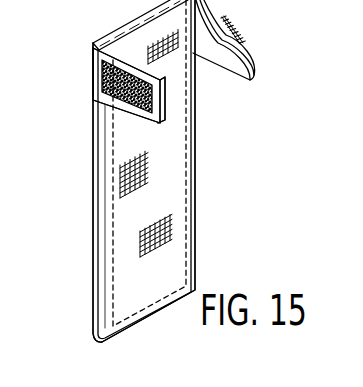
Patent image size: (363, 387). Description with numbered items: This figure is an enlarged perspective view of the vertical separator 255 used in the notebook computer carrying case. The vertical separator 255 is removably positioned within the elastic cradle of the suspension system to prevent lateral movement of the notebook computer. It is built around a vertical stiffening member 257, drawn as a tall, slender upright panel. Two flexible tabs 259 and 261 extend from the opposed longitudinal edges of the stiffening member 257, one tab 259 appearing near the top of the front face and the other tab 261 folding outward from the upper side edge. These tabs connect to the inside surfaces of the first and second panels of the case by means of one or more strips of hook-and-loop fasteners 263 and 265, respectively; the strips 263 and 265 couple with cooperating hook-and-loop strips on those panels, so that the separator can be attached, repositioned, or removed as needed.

The vertical separator 255 is at (213, 258).
The vertical stiffening member 257 is at (93, 260).
The flexible tab 259 is at (162, 122).
The flexible tab 261 is at (253, 73).
The strip of hook-and-loop fasteners 263 is at (110, 80).
The strip of hook-and-loop fasteners 265 is at (240, 33).